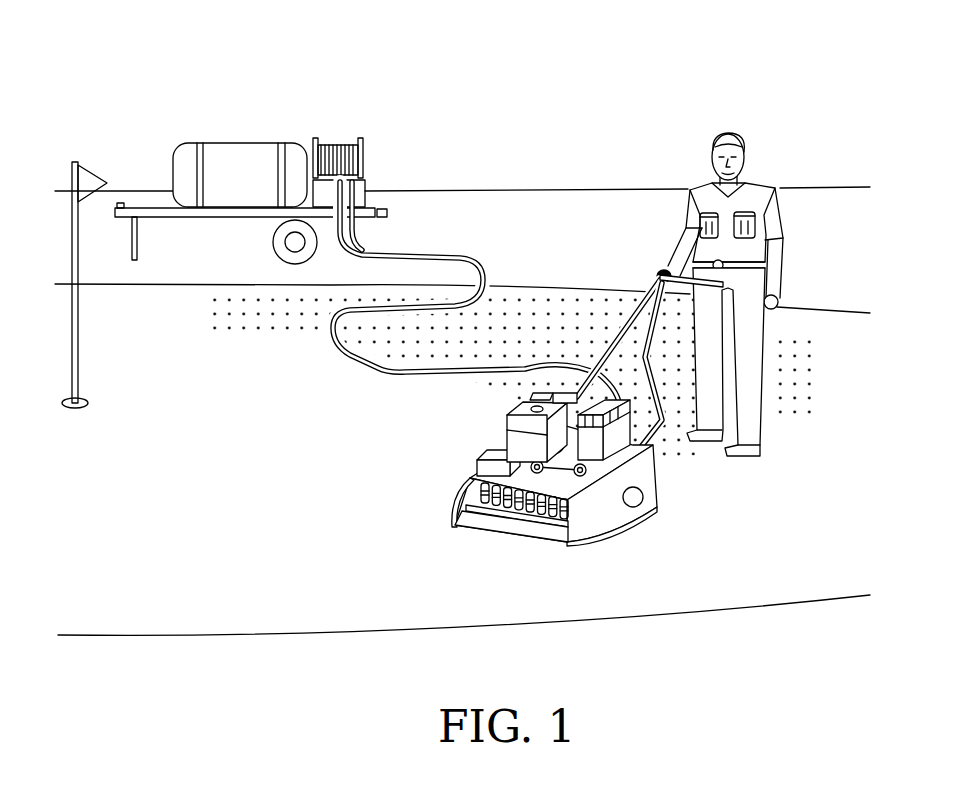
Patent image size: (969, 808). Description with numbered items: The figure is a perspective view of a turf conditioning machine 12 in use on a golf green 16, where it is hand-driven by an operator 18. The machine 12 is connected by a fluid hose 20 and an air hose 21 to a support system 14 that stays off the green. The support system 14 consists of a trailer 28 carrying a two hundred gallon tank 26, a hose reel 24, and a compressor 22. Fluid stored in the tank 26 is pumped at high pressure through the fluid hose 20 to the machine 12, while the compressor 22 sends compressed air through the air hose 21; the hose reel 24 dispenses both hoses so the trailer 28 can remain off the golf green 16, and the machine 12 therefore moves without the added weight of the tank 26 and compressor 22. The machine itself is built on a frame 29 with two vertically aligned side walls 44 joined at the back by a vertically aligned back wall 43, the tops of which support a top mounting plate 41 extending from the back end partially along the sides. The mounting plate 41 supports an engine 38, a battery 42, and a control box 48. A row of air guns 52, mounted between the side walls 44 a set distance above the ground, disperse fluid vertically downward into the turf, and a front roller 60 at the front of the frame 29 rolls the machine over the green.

The turf conditioning machine 12 is at (592, 281).
The support system 14 is at (282, 68).
The golf green 16 is at (153, 623).
The operator 18 is at (745, 190).
The fluid hose 20 is at (457, 296).
The air hose 21 is at (335, 337).
The compressor 22 is at (365, 192).
The hose reel 24 is at (335, 160).
The tank 26 is at (180, 143).
The trailer 28 is at (210, 218).
The frame 29 is at (442, 446).
The engine 38 is at (510, 442).
The top mounting plate 41 is at (596, 482).
The battery 42 is at (625, 433).
The back wall 43 is at (653, 467).
The side walls 44 is at (455, 500).
The control box 48 is at (477, 462).
The air guns 52 is at (503, 517).
The front roller 60 is at (523, 537).